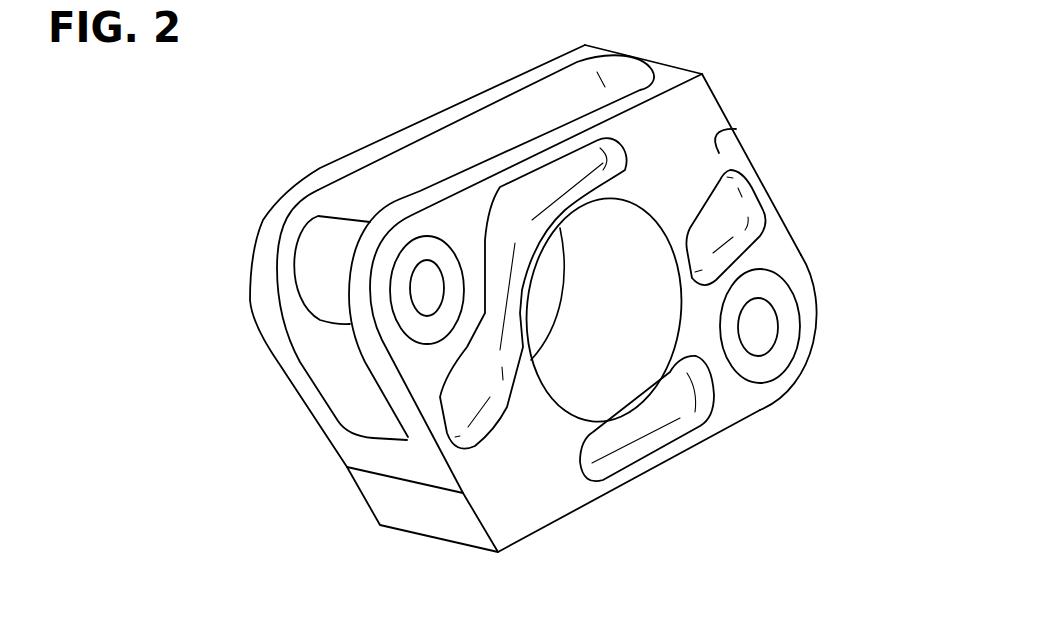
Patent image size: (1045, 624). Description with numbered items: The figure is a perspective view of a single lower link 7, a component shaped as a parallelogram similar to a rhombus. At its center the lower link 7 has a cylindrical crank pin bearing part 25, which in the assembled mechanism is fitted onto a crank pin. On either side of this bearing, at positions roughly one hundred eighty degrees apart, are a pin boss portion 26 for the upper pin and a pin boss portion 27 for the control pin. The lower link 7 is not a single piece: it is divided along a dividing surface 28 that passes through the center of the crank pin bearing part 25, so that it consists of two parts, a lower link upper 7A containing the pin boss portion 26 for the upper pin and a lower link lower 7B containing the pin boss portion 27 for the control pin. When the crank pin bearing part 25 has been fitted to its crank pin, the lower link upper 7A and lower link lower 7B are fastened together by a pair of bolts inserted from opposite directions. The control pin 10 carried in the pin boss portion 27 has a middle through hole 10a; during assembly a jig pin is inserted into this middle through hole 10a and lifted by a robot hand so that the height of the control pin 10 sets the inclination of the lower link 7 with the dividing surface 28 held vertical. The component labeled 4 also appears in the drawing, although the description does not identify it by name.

The lower link 7 is at (806, 192).
The lower link upper 7A is at (698, 102).
The lower link lower 7B is at (655, 462).
The cylindrical boss 4 is at (345, 228).
The control pin 10 is at (787, 312).
The middle through hole 10a is at (760, 345).
The crank pin bearing part 25 is at (595, 430).
The pin boss portion for the upper pin 26 is at (258, 275).
The pin boss portion for the control pin 27 is at (797, 367).
The dividing surface 28 is at (737, 128).